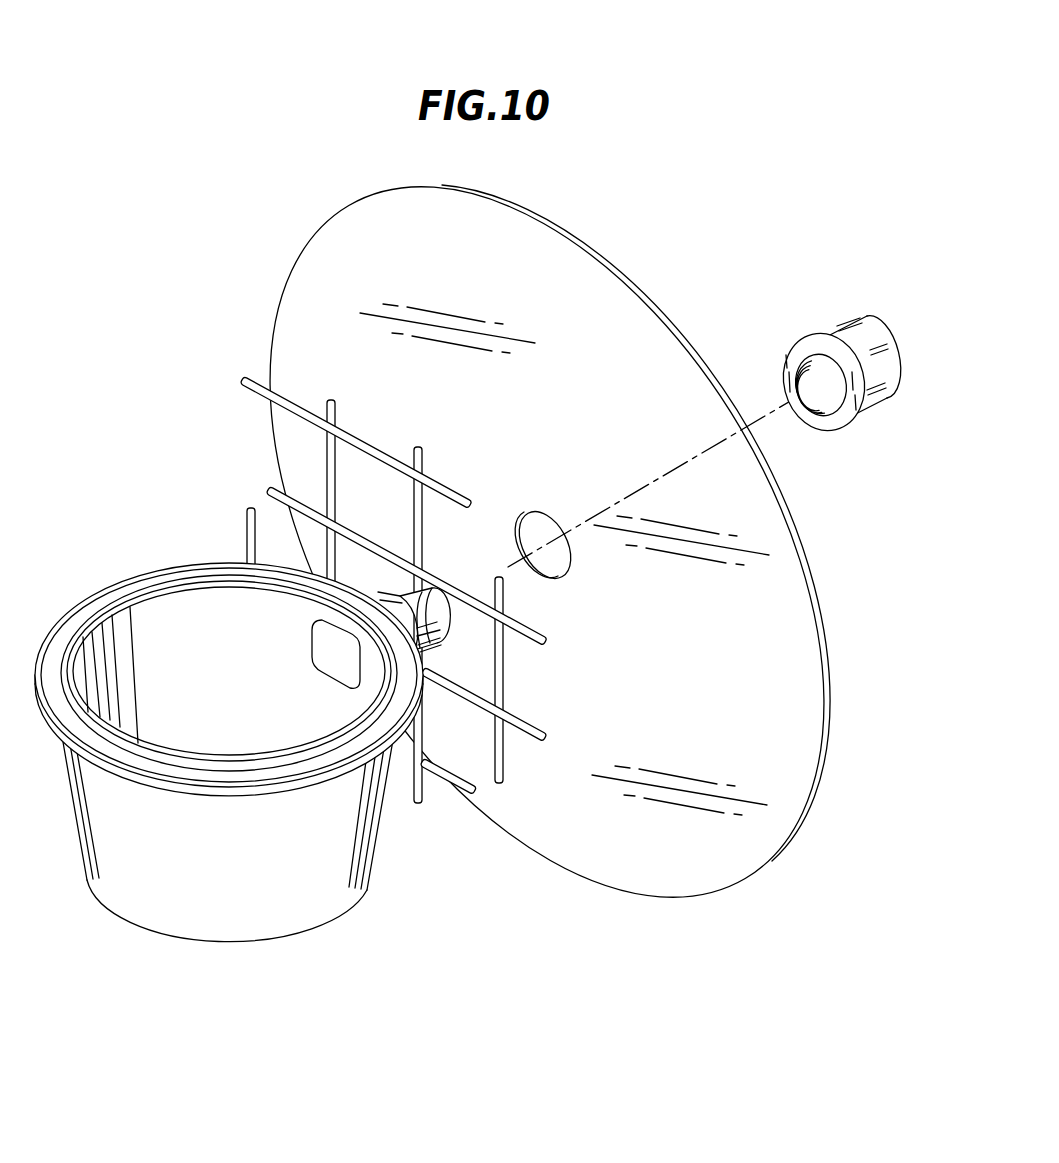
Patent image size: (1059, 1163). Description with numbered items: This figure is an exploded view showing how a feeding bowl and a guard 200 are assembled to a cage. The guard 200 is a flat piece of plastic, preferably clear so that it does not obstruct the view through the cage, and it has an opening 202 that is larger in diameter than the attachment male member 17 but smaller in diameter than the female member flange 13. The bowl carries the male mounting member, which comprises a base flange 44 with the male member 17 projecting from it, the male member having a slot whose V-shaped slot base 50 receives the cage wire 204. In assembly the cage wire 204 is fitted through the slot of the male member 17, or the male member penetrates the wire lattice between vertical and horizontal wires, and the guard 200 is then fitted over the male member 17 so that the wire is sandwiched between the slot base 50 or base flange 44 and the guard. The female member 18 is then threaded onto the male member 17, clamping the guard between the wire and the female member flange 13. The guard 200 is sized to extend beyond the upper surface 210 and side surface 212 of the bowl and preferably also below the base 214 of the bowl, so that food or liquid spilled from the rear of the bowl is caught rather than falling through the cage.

The guard 200 is at (785, 679).
The opening 202 is at (534, 538).
The cage wire 204 is at (425, 795).
The slot base 50 is at (408, 583).
The base flange 44 is at (440, 637).
The attachment male member 17 is at (430, 660).
The upper surface 210 is at (262, 762).
The side surface 212 is at (312, 893).
The base 214 is at (220, 937).
The female member 18 is at (868, 334).
The female member flange 13 is at (840, 428).